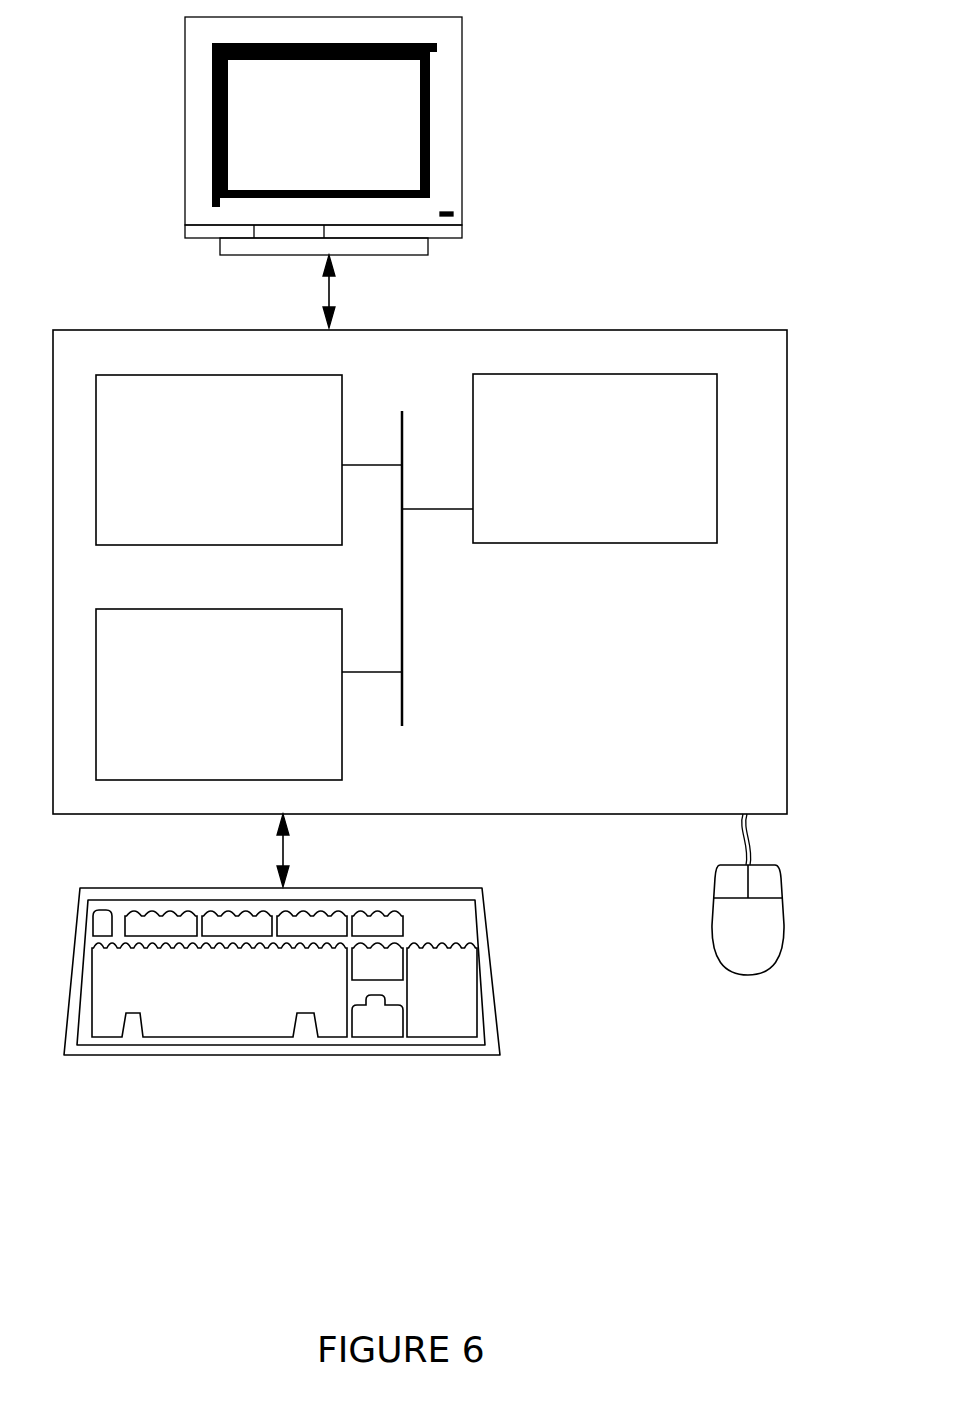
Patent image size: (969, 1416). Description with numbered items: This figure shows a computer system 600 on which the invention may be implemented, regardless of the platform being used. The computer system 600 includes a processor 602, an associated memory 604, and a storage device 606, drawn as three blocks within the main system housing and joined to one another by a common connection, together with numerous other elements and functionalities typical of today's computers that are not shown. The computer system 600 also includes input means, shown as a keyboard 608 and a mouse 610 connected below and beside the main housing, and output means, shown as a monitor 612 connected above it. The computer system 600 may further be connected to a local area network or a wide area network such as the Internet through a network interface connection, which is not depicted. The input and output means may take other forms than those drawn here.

The computer system 600 is at (585, 211).
The processor 602 is at (556, 472).
The associated memory 604 is at (196, 471).
The storage device 606 is at (193, 707).
The keyboard 608 is at (193, 1001).
The mouse 610 is at (725, 941).
The monitor 612 is at (298, 141).